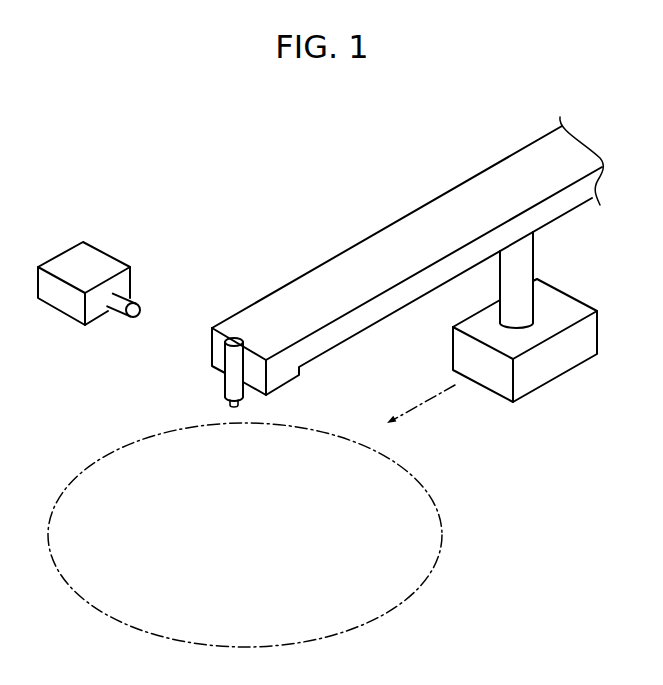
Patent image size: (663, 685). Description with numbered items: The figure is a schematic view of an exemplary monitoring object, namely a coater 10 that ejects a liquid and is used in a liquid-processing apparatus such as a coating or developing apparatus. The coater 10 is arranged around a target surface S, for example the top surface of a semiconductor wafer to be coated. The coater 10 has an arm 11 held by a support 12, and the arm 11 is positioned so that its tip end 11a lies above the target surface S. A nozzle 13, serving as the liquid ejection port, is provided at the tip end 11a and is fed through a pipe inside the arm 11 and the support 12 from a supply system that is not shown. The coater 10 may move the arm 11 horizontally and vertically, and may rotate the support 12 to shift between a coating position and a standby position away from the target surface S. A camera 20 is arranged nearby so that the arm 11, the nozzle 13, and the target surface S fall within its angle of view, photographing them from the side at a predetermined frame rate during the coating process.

The coater 10 is at (238, 158).
The arm 11 is at (392, 224).
The tip end 11a is at (243, 300).
The support 12 is at (541, 251).
The nozzle 13 is at (229, 405).
The camera 20 is at (90, 242).
The target surface S is at (93, 463).